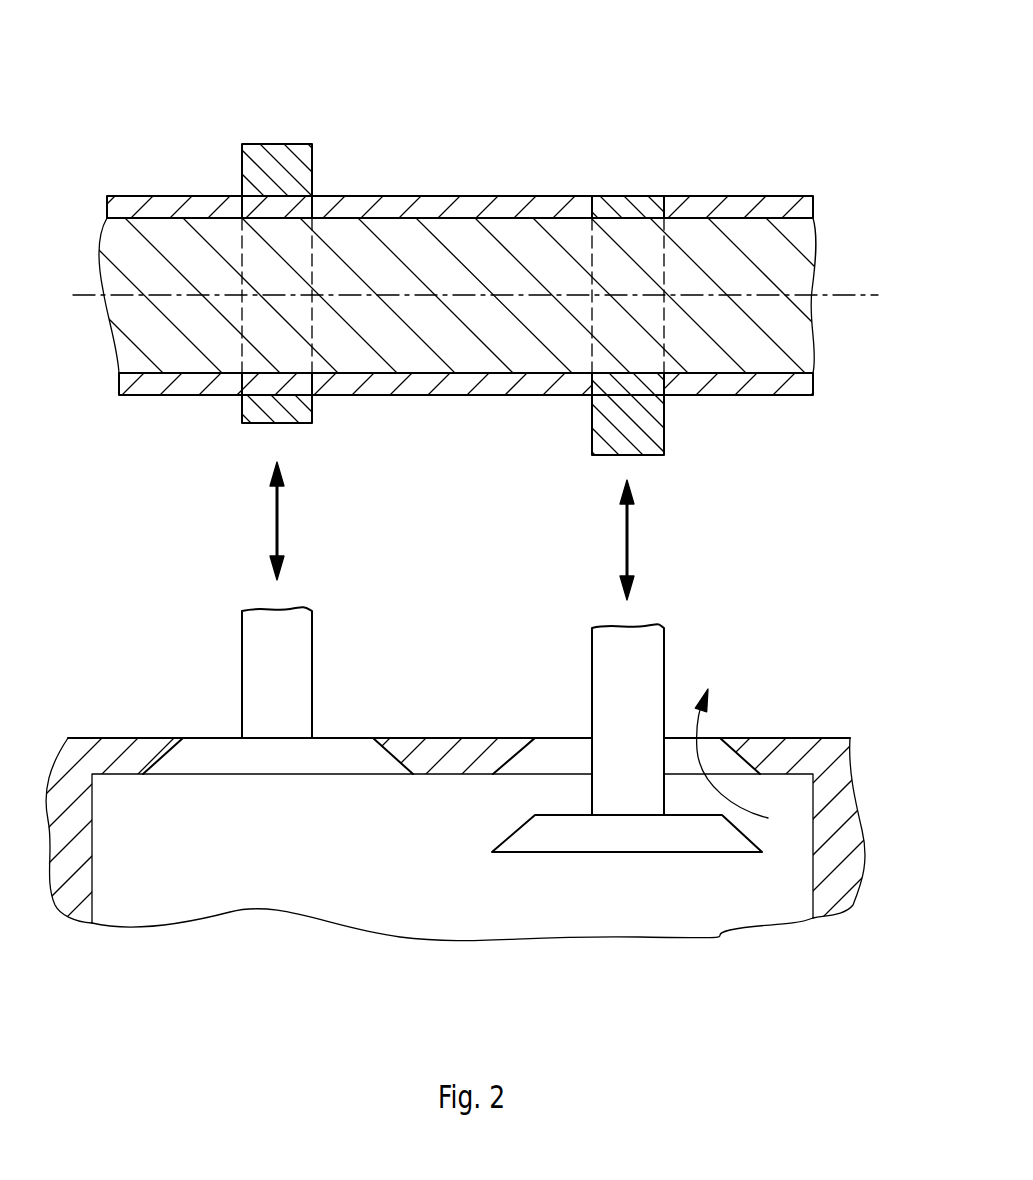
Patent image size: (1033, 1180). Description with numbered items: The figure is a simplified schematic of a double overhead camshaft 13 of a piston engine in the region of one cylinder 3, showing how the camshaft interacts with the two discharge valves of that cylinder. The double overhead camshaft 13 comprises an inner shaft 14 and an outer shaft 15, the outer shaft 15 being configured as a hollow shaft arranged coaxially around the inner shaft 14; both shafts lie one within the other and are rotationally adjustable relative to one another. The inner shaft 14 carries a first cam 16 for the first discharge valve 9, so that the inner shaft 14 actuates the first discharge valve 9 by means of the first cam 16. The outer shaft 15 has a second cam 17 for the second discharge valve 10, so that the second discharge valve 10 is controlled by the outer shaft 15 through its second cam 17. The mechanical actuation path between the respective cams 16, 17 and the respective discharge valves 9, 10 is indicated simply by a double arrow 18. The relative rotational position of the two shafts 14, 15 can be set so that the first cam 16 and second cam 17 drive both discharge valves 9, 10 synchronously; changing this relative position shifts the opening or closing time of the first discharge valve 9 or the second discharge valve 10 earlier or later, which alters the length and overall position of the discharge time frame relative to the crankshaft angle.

The cylinder 3 is at (408, 879).
The first discharge valve 9 is at (633, 842).
The second discharge valve 10 is at (272, 762).
The double overhead camshaft 13 is at (725, 149).
The inner shaft 14 is at (515, 250).
The outer shaft 15 is at (436, 205).
The first cam 16 is at (655, 438).
The second cam 17 is at (263, 410).
The double arrow 18 is at (277, 520).